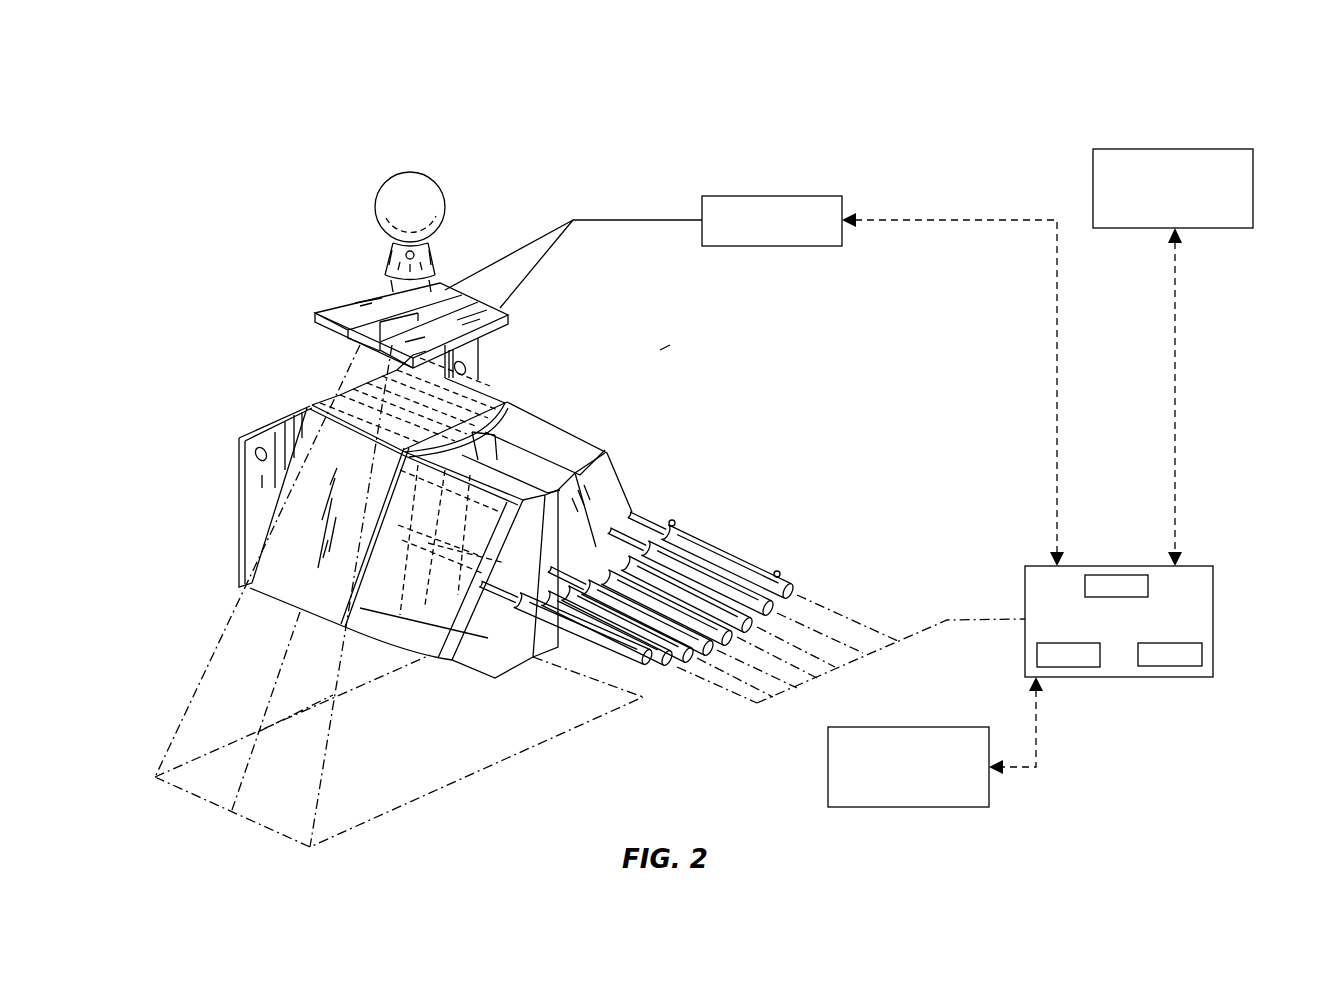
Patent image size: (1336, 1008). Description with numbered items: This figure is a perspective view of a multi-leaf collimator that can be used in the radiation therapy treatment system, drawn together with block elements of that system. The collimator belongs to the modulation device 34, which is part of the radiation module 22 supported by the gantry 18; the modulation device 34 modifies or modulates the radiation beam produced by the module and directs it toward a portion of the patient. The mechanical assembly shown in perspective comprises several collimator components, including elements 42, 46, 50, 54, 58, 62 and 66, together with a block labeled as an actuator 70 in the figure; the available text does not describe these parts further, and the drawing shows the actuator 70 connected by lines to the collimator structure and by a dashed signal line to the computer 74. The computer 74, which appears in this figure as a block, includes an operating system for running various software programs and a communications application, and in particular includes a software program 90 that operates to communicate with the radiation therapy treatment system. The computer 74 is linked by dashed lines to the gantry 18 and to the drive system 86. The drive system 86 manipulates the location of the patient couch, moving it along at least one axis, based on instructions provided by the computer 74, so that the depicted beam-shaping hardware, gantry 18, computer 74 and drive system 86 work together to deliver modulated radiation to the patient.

The gantry 18 is at (1140, 149).
The radiation module 22 is at (394, 189).
The modulation device 34 is at (665, 347).
The positioning system 42 is at (508, 143).
The support assembly 46 is at (336, 245).
The base plate 50 is at (368, 347).
The mounting plate 54 is at (330, 303).
The slide plate 58 is at (447, 297).
The housing 62 is at (507, 390).
The rollers 66 is at (613, 478).
The actuator 70 is at (732, 196).
The computer 74 is at (1213, 590).
The drive system 86 is at (922, 807).
The software program(s) 90 is at (1160, 660).